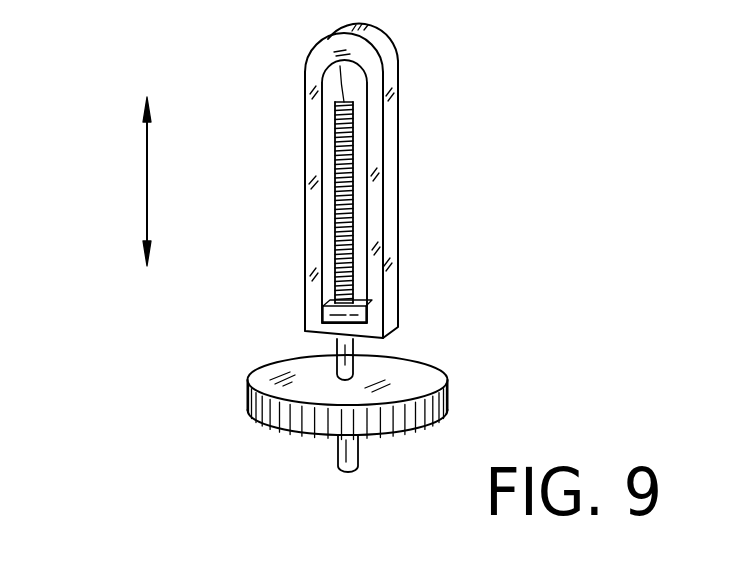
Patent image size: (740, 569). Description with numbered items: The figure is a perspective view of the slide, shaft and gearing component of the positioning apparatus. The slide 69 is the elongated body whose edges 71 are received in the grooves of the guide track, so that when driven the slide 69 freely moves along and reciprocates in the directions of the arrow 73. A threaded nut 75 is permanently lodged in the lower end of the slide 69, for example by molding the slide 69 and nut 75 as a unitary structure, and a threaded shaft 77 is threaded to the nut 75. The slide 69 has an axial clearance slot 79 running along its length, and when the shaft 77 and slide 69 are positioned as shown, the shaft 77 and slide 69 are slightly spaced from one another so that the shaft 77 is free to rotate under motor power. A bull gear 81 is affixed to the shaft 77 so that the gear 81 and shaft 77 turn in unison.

The slide 69 is at (380, 54).
The edges 71 is at (322, 183).
The arrow 73 is at (147, 160).
The threaded nut 75 is at (327, 313).
The threaded shaft 77 is at (350, 118).
The axial clearance slot 79 is at (350, 82).
The bull gear 81 is at (448, 400).